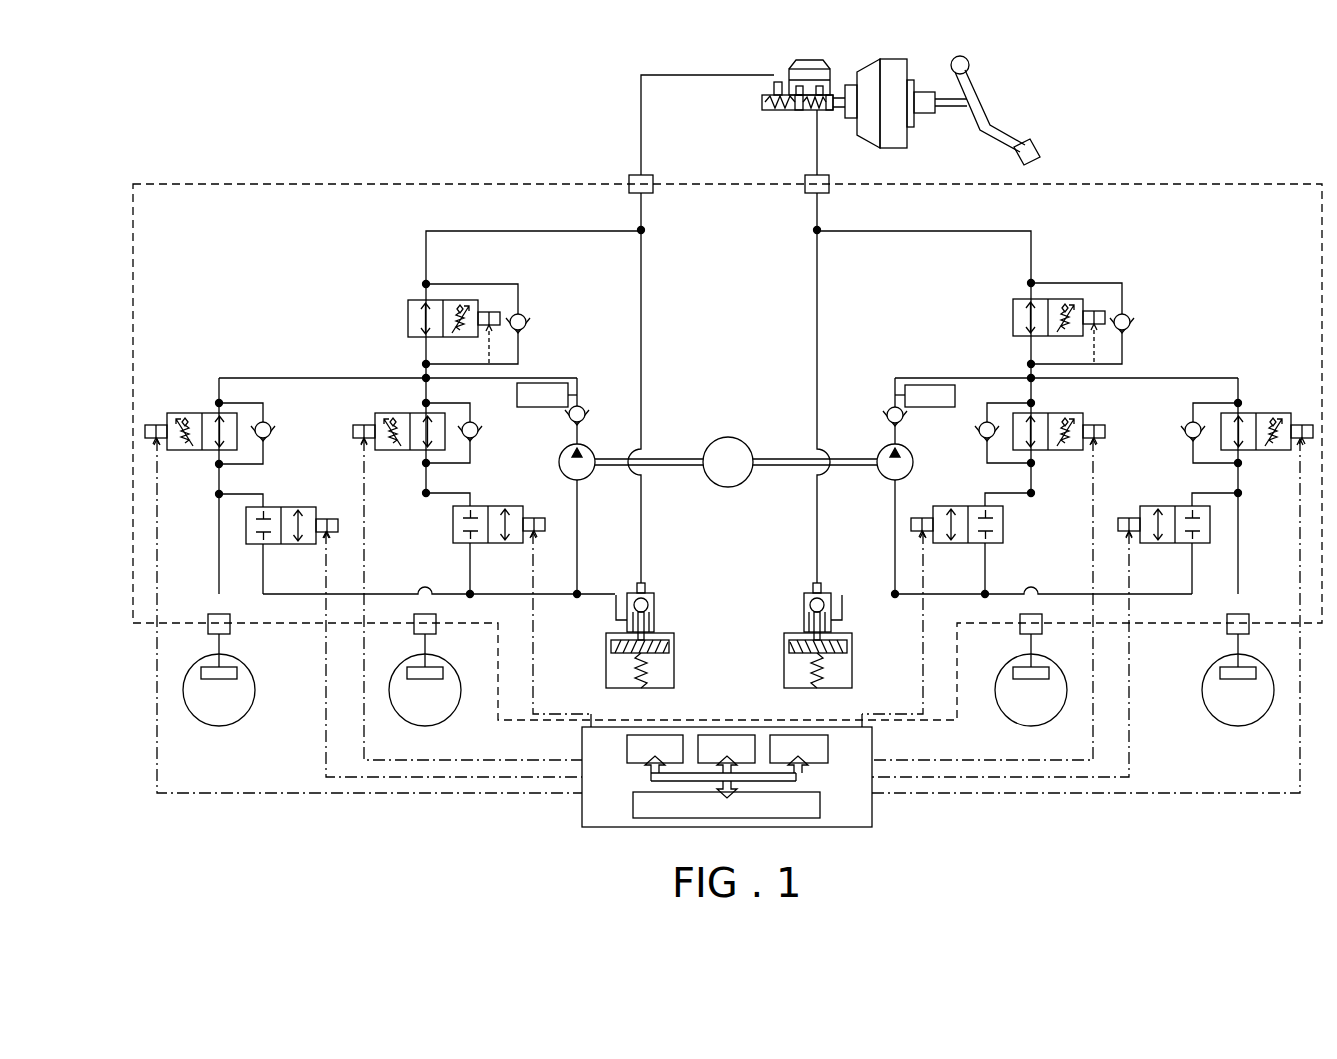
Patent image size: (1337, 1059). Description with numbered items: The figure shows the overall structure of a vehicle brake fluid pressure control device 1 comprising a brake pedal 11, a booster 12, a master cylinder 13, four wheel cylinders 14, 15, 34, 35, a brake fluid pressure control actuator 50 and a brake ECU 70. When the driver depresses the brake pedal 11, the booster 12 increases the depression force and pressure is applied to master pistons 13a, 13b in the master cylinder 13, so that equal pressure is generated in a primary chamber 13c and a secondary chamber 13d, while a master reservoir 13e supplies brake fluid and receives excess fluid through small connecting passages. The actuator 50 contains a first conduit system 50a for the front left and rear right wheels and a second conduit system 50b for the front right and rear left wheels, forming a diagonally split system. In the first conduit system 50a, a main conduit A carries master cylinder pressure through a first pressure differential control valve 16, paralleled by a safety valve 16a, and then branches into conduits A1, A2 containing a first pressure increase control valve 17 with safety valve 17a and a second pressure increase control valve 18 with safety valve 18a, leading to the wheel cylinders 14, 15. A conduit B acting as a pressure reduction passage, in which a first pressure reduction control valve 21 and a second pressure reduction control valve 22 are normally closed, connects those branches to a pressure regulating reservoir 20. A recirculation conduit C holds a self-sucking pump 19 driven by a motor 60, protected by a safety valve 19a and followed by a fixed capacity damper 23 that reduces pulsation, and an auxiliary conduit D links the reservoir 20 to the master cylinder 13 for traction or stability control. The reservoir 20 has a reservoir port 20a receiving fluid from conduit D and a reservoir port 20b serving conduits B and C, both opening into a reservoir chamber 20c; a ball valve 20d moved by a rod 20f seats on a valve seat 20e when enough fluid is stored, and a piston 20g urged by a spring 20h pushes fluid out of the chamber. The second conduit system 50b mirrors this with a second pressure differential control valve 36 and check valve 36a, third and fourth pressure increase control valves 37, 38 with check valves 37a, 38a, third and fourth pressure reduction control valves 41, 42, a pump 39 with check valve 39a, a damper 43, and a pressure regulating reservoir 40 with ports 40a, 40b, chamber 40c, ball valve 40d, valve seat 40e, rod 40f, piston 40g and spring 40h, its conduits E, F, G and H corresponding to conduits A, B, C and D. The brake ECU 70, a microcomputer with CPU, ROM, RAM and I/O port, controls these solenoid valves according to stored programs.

The vehicle brake fluid pressure control device 1 is at (1107, 48).
The brake pedal 11 is at (983, 93).
The booster 12 is at (892, 59).
The master cylinder 13 is at (757, 97).
The master piston 13a is at (800, 112).
The master piston 13b is at (840, 112).
The primary chamber 13c is at (778, 112).
The secondary chamber 13d is at (824, 112).
The master reservoir 13e is at (813, 60).
The wheel cylinder 14 is at (201, 672).
The wheel cylinder 15 is at (407, 672).
The first pressure differential control valve 16 is at (408, 318).
The safety valve 16a is at (514, 312).
The first pressure increase control valve 17 is at (210, 413).
The safety valve 17a is at (272, 423).
The second pressure increase control valve 18 is at (407, 413).
The safety valve 18a is at (480, 430).
The pump 19 is at (559, 462).
The safety valve 19a is at (587, 410).
The pressure regulating reservoir 20 is at (603, 665).
The reservoir port 20a is at (645, 585).
The reservoir port 20b is at (614, 618).
The reservoir chamber 20c is at (608, 637).
The ball valve 20d is at (650, 603).
The valve seat 20e is at (652, 620).
The rod 20f is at (648, 632).
The piston 20g is at (655, 655).
The spring 20h is at (650, 687).
The first pressure reduction control valve 21 is at (270, 507).
The second pressure reduction control valve 22 is at (484, 506).
The fixed capacity damper 23 is at (568, 388).
The wheel cylinder 34 is at (1256, 672).
The wheel cylinder 35 is at (1065, 667).
The second pressure differential control valve 36 is at (1013, 318).
The check valve 36a is at (1118, 312).
The third pressure increase control valve 37 is at (1250, 413).
The check valve 37a is at (1190, 422).
The fourth pressure increase control valve 38 is at (1050, 413).
The check valve 38a is at (978, 430).
The pump 39 is at (913, 462).
The check valve 39a is at (886, 410).
The pressure regulating reservoir 40 is at (855, 665).
The reservoir port 40a is at (813, 585).
The reservoir port 40b is at (844, 618).
The reservoir chamber 40c is at (850, 637).
The ball valve 40d is at (808, 603).
The valve seat 40e is at (806, 620).
The rod 40f is at (810, 632).
The piston 40g is at (803, 655).
The spring 40h is at (806, 687).
The third pressure reduction control valve 41 is at (1190, 506).
The fourth pressure reduction control valve 42 is at (975, 506).
The damper 43 is at (903, 390).
The brake fluid pressure control actuator 50 is at (459, 184).
The first conduit system 50a is at (300, 300).
The second conduit system 50b is at (1180, 300).
The motor 60 is at (716, 438).
The brake ECU 70 is at (872, 818).
The conduit A is at (453, 231).
The conduit A1 is at (219, 552).
The conduit A2 is at (426, 538).
The conduit B is at (492, 598).
The conduit C is at (545, 383).
The conduit D is at (641, 313).
The conduit E is at (1004, 231).
The conduit F is at (960, 598).
The conduit G is at (917, 385).
The conduit H is at (817, 313).